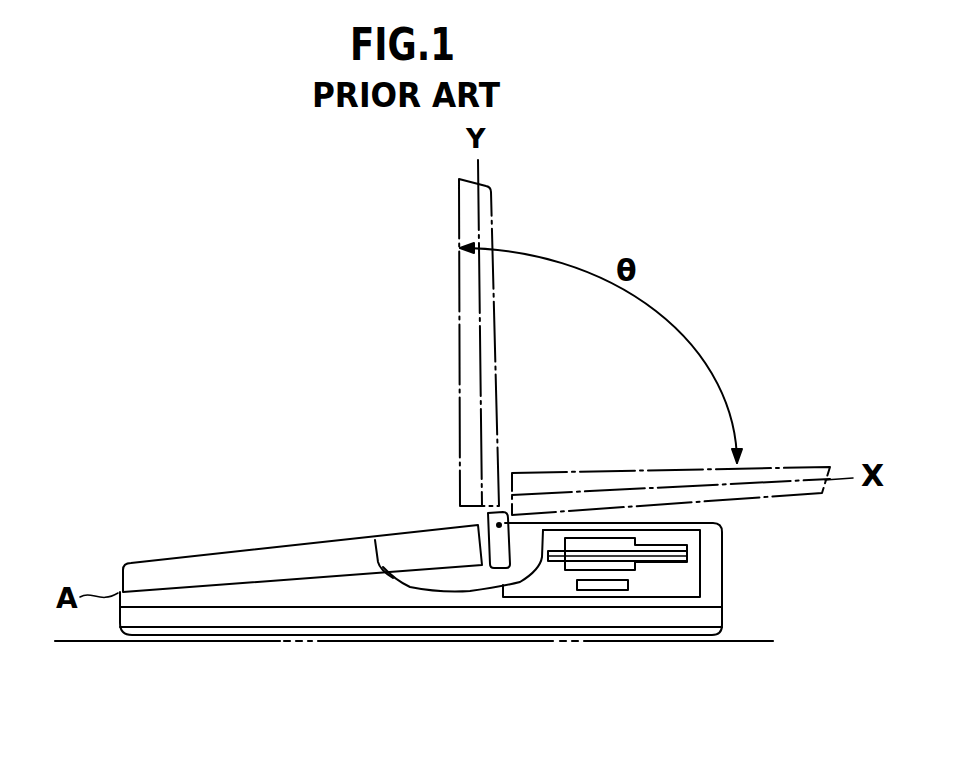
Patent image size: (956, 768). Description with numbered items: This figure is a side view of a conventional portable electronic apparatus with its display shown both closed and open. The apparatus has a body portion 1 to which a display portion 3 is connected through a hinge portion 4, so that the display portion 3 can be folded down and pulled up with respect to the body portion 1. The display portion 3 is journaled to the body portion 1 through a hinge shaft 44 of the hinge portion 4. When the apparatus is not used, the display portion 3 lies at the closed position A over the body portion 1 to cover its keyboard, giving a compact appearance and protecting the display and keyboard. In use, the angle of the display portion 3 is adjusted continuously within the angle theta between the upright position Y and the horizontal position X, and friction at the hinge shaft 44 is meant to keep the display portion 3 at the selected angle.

The body portion 1 is at (712, 597).
The display portion 3 is at (278, 573).
The hinge portion 4 is at (497, 555).
The hinge shaft 44 is at (492, 522).